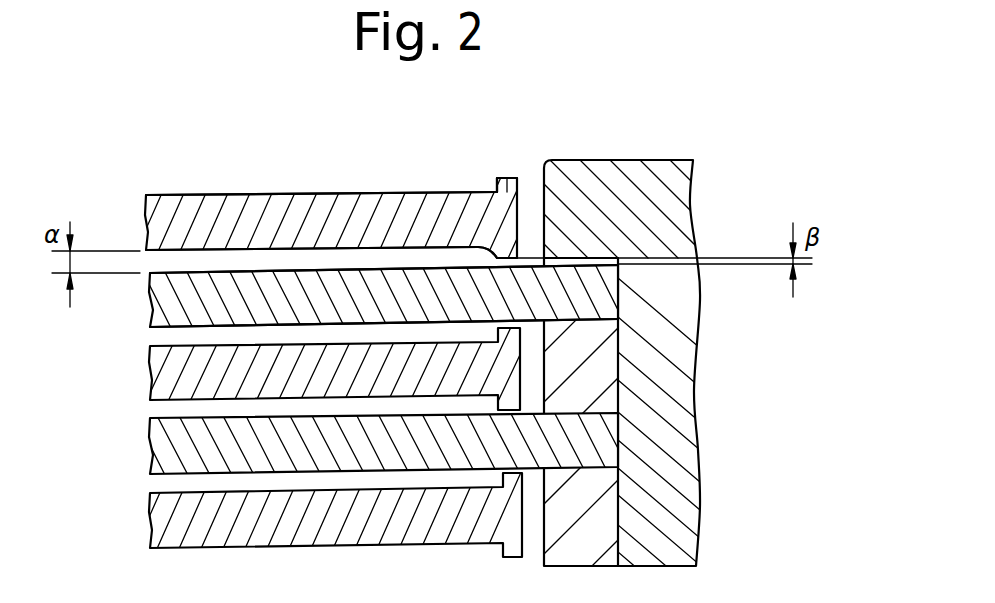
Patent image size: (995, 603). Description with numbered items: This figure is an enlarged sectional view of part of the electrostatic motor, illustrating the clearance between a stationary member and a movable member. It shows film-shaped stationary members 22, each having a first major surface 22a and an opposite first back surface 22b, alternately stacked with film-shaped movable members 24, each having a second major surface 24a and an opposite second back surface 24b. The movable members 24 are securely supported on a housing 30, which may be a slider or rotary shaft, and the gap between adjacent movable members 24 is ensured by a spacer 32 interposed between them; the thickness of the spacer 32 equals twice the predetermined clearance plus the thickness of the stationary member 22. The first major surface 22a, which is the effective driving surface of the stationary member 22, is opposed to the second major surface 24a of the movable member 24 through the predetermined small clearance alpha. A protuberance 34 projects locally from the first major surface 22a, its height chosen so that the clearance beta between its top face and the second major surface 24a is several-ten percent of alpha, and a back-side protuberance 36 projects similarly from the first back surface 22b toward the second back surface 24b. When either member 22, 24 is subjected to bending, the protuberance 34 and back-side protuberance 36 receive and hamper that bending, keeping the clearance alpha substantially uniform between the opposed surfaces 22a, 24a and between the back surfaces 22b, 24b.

The stationary member 22 is at (314, 185).
The first major surface 22a is at (273, 250).
The first back surface 22b is at (377, 192).
The movable member 24 is at (203, 262).
The second major surface 24a is at (163, 273).
The second back surface 24b is at (173, 327).
The housing 30 is at (592, 160).
The spacer 32 is at (603, 380).
The protuberance 34 is at (456, 200).
The back-side protuberance 36 is at (507, 178).